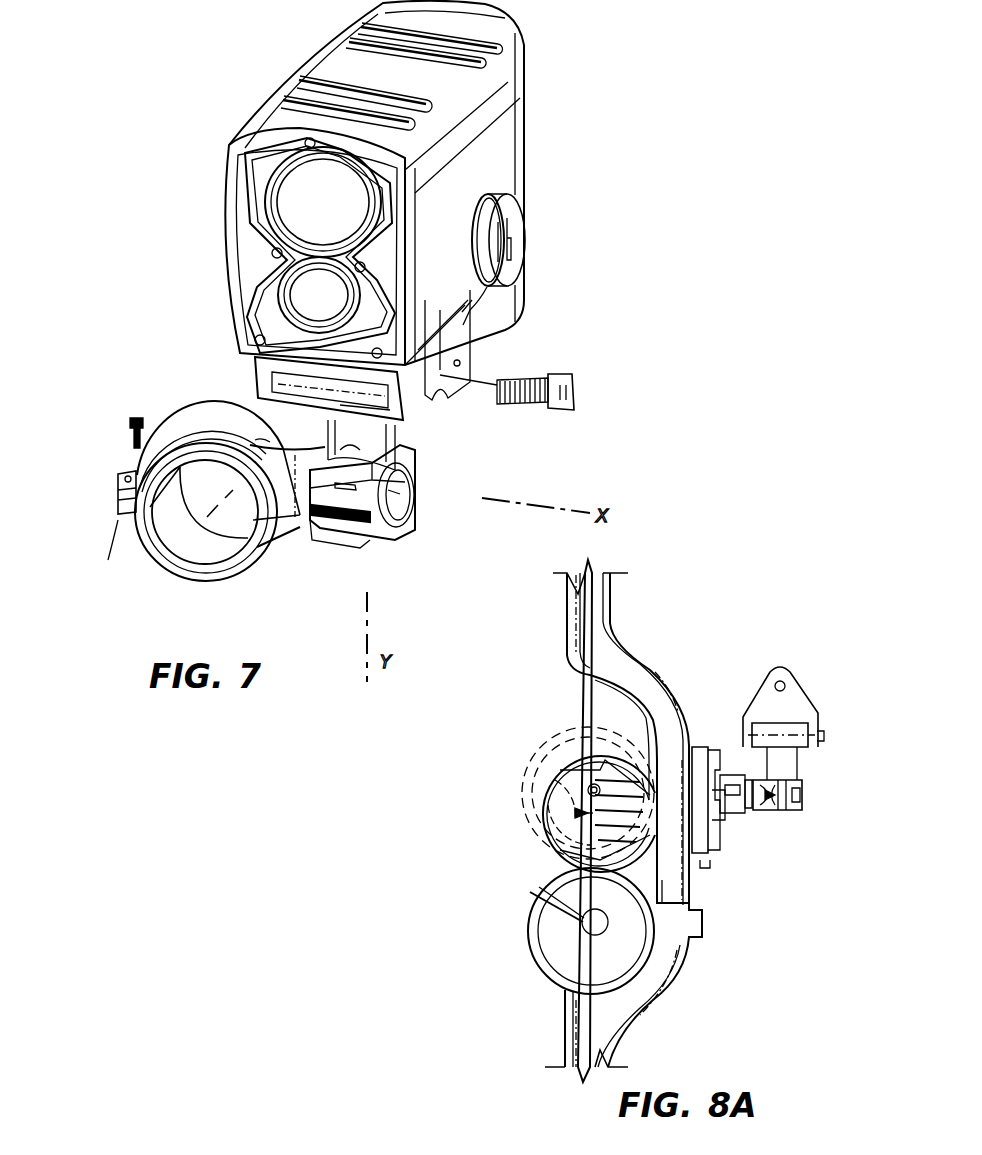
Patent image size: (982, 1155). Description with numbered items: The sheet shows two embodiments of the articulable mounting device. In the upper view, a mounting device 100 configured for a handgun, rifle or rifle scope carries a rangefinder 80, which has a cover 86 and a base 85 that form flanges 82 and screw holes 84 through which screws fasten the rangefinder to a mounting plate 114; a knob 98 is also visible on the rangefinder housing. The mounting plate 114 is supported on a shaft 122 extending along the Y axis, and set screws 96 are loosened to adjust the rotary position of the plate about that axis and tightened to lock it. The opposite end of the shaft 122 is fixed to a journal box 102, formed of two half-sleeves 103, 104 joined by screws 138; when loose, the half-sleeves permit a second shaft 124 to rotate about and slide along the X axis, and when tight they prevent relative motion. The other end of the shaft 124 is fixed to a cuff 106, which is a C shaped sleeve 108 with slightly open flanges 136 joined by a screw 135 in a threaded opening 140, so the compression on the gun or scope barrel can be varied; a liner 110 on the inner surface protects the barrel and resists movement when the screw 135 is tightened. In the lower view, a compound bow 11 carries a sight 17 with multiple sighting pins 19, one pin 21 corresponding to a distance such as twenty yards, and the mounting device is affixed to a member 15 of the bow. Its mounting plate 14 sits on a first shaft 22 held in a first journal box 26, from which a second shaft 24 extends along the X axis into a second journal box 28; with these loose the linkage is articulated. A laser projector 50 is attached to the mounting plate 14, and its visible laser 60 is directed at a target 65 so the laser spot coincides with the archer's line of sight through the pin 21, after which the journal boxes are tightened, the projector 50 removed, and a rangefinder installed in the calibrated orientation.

In FIG. 7, the rangefinder 80 is at (612, 76).
In FIG. 7, the cover 86 is at (525, 45).
In FIG. 7, the knob 98 is at (490, 268).
In FIG. 7, the flanges 82 is at (478, 325).
In FIG. 7, the base 85 is at (478, 344).
In FIG. 7, the screw holes 84 is at (462, 366).
In FIG. 7, the set screws 96 is at (570, 380).
In FIG. 7, the mounting plate 114 is at (398, 412).
In FIG. 7, the mounting device 100 is at (498, 476).
In FIG. 7, the shaft 122 is at (398, 432).
In FIG. 7, the half-sleeve 104 is at (405, 480).
In FIG. 7, the second shaft 124 is at (400, 515).
In FIG. 7, the screws 138 is at (348, 532).
In FIG. 7, the half-sleeve 103 is at (385, 535).
In FIG. 7, the journal box 102 is at (350, 558).
In FIG. 7, the cuff 106 is at (107, 502).
In FIG. 7, the C shaped sleeve 108 is at (200, 425).
In FIG. 7, the liner 110 is at (205, 580).
In FIG. 7, the threaded opening 140 is at (128, 476).
In FIG. 7, the flanges 136 is at (124, 515).
In FIG. 7, the screw 135 is at (136, 415).
In FIG. 8A, the bow 11 is at (616, 614).
In FIG. 8A, the member 15 is at (655, 690).
In FIG. 8A, the sighting pins 19 is at (548, 865).
In FIG. 8A, the sight 17 is at (540, 828).
In FIG. 8A, the pin 21 is at (575, 790).
In FIG. 8A, the target 65 is at (560, 730).
In FIG. 8A, the second journal box 28 is at (735, 775).
In FIG. 8A, the laser projector 50 is at (750, 670).
In FIG. 8A, the visible laser projector 60 is at (786, 680).
In FIG. 8A, the mounting plate 14 is at (766, 728).
In FIG. 8A, the first shaft 22 is at (805, 768).
In FIG. 8A, the second shaft 24 is at (758, 812).
In FIG. 8A, the first journal box 26 is at (798, 812).